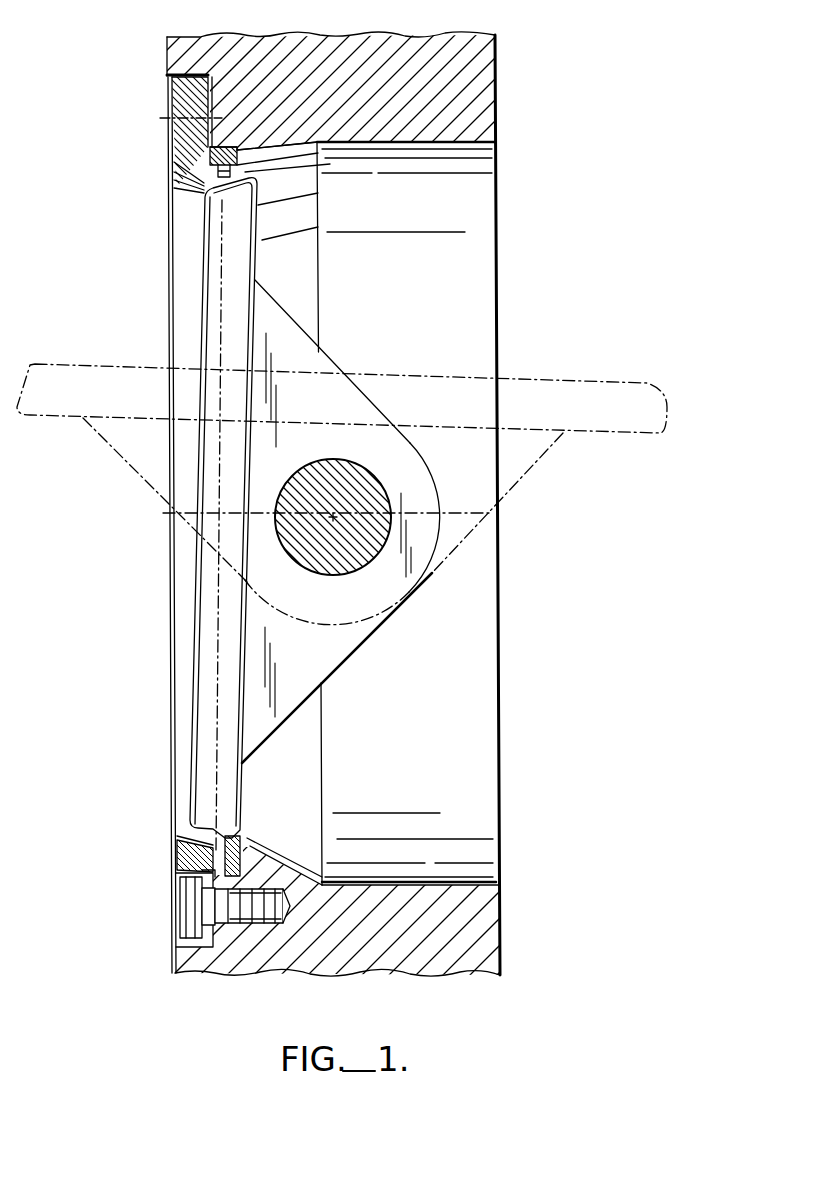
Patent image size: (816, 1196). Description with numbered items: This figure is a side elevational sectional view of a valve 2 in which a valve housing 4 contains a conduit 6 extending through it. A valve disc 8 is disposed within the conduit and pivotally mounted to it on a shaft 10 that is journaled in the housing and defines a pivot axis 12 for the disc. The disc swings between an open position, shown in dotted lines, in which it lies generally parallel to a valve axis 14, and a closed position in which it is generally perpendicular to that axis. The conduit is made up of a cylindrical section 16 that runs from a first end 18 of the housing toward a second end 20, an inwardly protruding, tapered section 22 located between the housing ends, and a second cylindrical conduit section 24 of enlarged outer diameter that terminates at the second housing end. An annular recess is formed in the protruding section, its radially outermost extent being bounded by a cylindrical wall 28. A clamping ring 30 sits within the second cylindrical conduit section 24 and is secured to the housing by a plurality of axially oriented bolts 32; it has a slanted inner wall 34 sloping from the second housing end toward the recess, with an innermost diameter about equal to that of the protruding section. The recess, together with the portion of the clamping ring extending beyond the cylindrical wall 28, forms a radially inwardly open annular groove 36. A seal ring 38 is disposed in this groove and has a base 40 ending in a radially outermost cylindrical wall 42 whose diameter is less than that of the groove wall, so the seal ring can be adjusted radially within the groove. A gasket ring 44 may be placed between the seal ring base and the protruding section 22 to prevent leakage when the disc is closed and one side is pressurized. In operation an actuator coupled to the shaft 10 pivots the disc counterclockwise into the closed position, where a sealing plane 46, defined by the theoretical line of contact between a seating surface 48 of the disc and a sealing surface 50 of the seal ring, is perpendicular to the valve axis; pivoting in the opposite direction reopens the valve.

The valve 2 is at (548, 142).
The valve housing 4 is at (492, 96).
The conduit 6 is at (470, 203).
The valve disc 8 is at (258, 262).
The shaft 10 is at (345, 475).
The pivot axis 12 is at (333, 517).
The valve axis 14 is at (437, 513).
The cylindrical section 16 is at (482, 885).
The first end 18 is at (500, 808).
The second end 20 is at (168, 52).
The inwardly protruding tapered section 22 is at (300, 872).
The second cylindrical conduit section 24 is at (170, 89).
The cylindrical wall 28 is at (222, 213).
The clamping ring 30 is at (183, 138).
The bolts 32 is at (190, 912).
The slanted inner wall 34 is at (190, 845).
The annular groove 36 is at (330, 813).
The seal ring 38 is at (204, 187).
The base 40 is at (220, 172).
The cylindrical wall 42 is at (219, 147).
The gasket ring 44 is at (248, 845).
The sealing plane 46 is at (223, 722).
The seating surface 48 is at (213, 318).
The sealing surface 50 is at (212, 818).